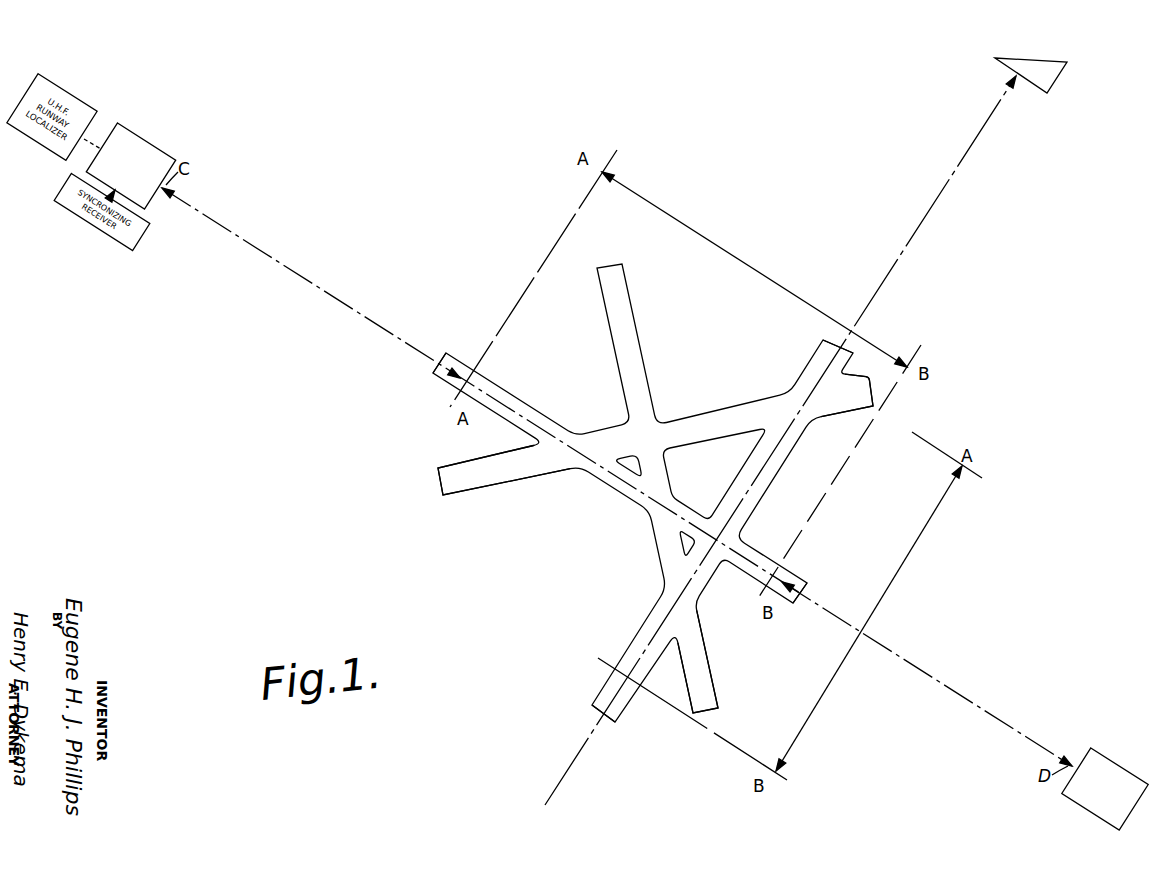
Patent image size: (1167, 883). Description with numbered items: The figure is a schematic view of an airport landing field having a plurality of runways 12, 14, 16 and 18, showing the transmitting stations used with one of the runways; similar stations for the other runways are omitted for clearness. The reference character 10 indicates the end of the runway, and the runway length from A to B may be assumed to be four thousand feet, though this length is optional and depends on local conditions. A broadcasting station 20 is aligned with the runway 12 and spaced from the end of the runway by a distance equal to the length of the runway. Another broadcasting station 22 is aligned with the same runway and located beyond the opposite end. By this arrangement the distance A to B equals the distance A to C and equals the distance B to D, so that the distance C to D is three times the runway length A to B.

The end of the runway 10 is at (608, 270).
The runway 12 is at (616, 492).
The runway 14 is at (760, 490).
The runway 16 is at (698, 660).
The runway 18 is at (528, 476).
The broadcasting station 20 is at (1117, 770).
The broadcasting station 22 is at (150, 150).